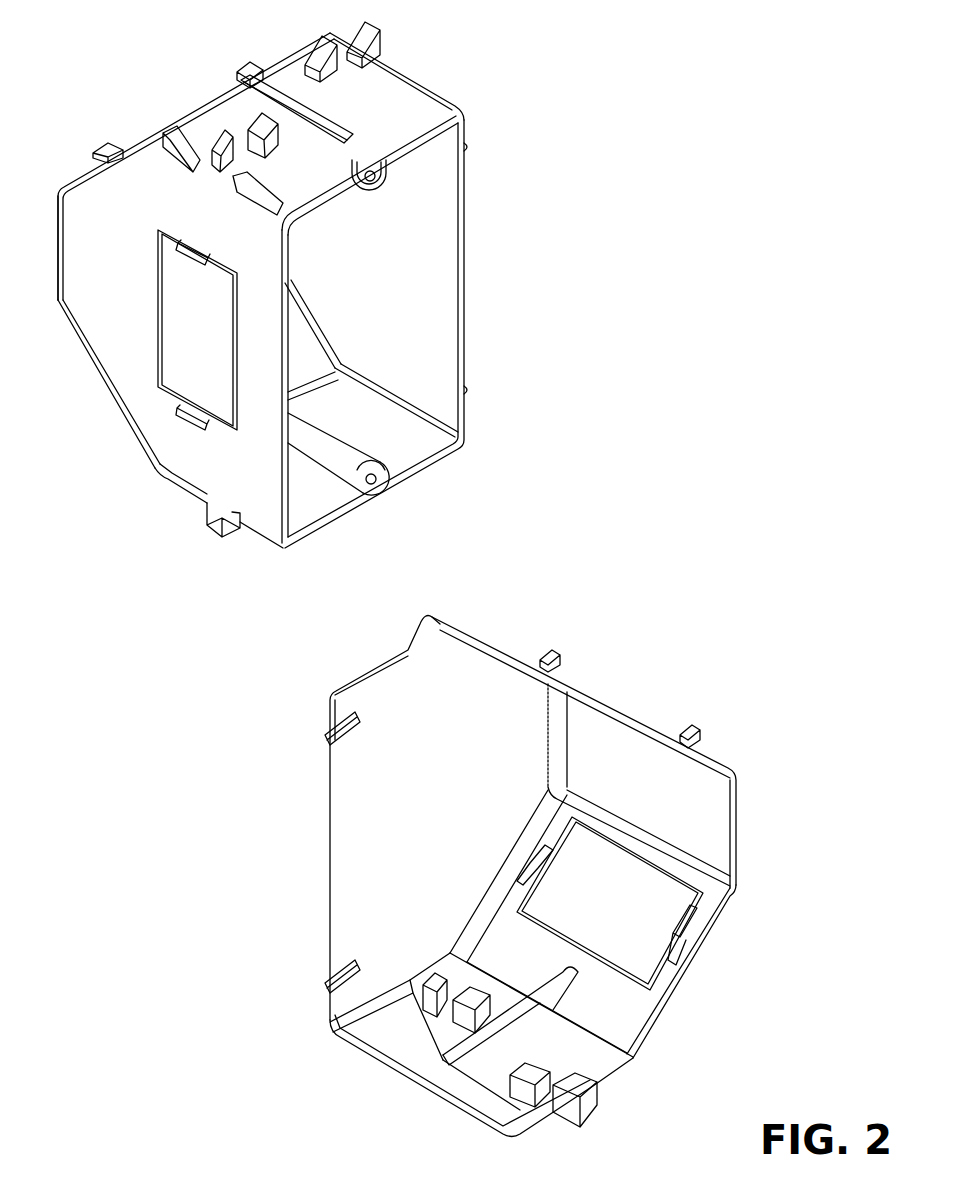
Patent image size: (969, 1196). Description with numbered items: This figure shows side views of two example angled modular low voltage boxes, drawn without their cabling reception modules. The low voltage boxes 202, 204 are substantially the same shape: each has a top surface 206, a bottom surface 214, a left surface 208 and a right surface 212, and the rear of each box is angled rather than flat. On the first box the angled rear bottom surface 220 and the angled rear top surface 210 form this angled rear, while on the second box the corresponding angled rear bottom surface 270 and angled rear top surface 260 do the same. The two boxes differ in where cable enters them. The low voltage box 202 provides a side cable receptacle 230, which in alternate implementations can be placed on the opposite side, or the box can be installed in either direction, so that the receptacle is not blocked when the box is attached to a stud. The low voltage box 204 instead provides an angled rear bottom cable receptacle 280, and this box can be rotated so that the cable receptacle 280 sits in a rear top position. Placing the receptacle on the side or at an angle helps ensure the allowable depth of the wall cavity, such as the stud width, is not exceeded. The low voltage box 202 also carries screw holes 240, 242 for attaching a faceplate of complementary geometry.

The low voltage box 202 is at (211, 66).
The low voltage box 204 is at (335, 665).
The top surface 206 is at (385, 100).
The left surface 208 is at (213, 463).
The angled rear top surface 210 is at (128, 148).
The right surface 212 is at (408, 808).
The bottom surface 214 is at (383, 1042).
The angled rear bottom surface 220 is at (107, 384).
The side cable receptacle 230 is at (157, 236).
The screw hole 240 is at (378, 174).
The screw hole 242 is at (376, 481).
The angled rear top surface 260 is at (614, 712).
The angled rear bottom surface 270 is at (660, 997).
The angled rear bottom cable receptacle 280 is at (693, 903).